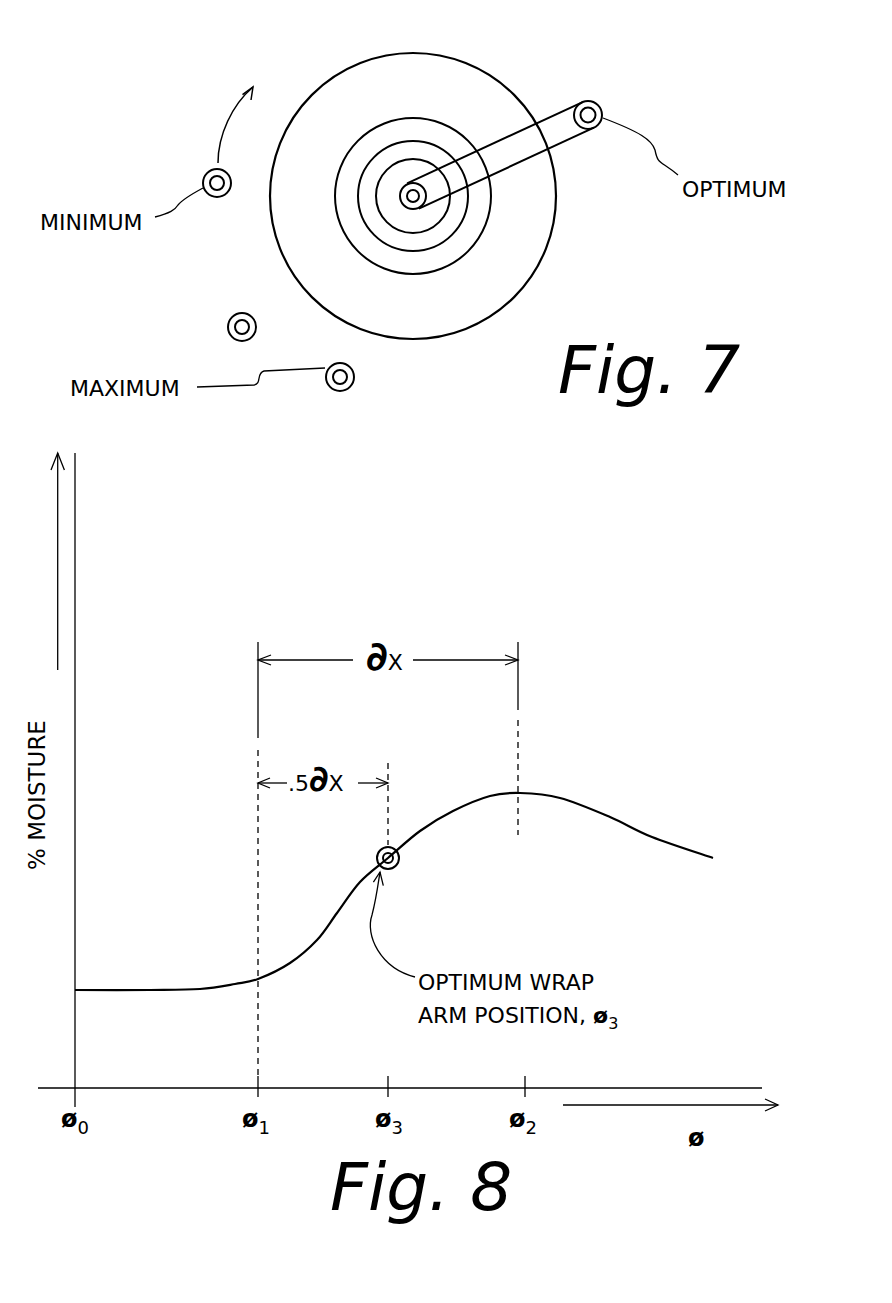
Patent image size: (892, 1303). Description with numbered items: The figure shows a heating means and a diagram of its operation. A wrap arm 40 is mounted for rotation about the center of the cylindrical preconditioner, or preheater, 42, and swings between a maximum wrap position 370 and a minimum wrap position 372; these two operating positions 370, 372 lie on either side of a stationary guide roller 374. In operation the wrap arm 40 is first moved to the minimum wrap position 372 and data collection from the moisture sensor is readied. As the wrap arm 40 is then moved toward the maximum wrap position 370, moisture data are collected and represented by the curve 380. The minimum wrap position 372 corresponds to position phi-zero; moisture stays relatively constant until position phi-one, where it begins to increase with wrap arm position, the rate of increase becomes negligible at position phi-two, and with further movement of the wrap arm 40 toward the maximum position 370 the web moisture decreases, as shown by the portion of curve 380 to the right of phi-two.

In FIG. 7, the wrap arm 40 is at (590, 100).
In FIG. 7, the preconditioner 42 is at (540, 253).
In FIG. 7, the maximum wrap position 370 is at (355, 370).
In FIG. 7, the minimum wrap position 372 is at (208, 173).
In FIG. 7, the stationary guide roller 374 is at (233, 315).
In FIG. 8, the curve 380 is at (652, 837).